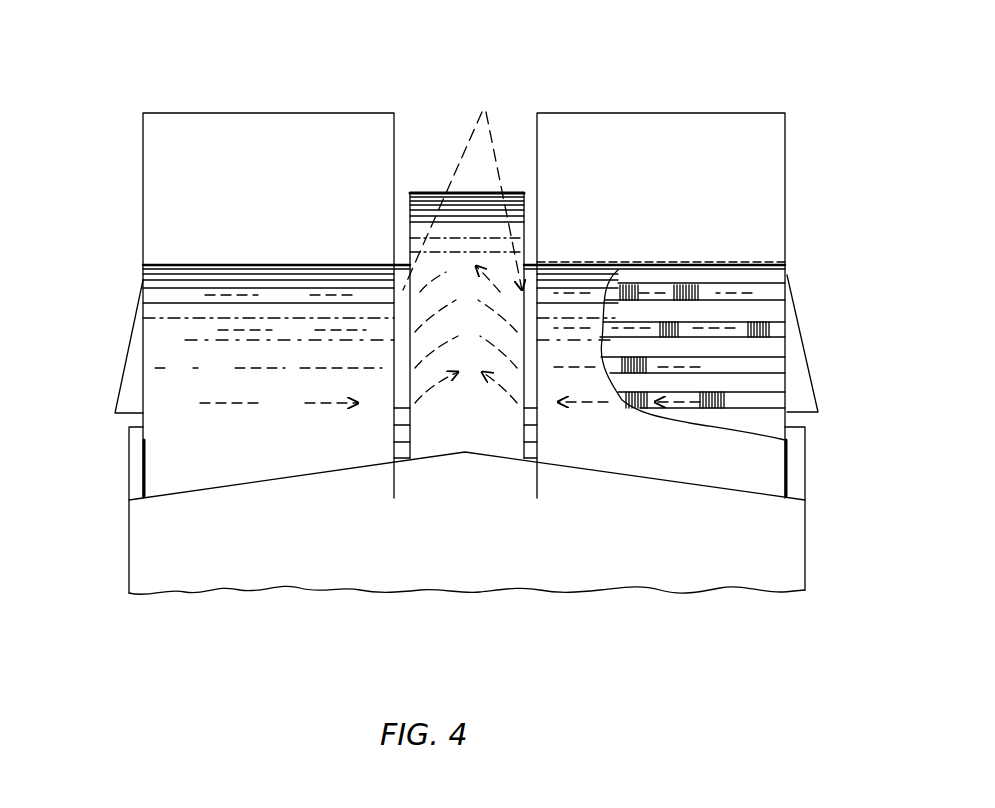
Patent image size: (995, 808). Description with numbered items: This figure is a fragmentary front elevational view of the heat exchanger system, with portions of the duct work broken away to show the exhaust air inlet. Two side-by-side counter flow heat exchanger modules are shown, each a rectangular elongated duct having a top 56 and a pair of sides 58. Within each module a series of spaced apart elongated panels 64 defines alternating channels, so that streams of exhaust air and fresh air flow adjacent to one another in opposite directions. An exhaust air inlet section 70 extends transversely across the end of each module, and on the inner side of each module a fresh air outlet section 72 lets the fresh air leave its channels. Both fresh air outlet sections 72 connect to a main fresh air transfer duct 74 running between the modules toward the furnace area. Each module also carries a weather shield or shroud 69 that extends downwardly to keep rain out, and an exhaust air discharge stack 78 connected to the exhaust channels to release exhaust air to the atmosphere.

The top 56 is at (193, 265).
The sides 58 is at (148, 342).
The spaced apart elongated panels 64 is at (722, 392).
The weather shield or shroud 69 is at (128, 395).
The exhaust air inlet section 70 is at (789, 278).
The fresh air outlet section 72 is at (462, 241).
The main fresh air transfer duct 74 is at (447, 188).
The exhaust air discharge stack 78 is at (188, 163).